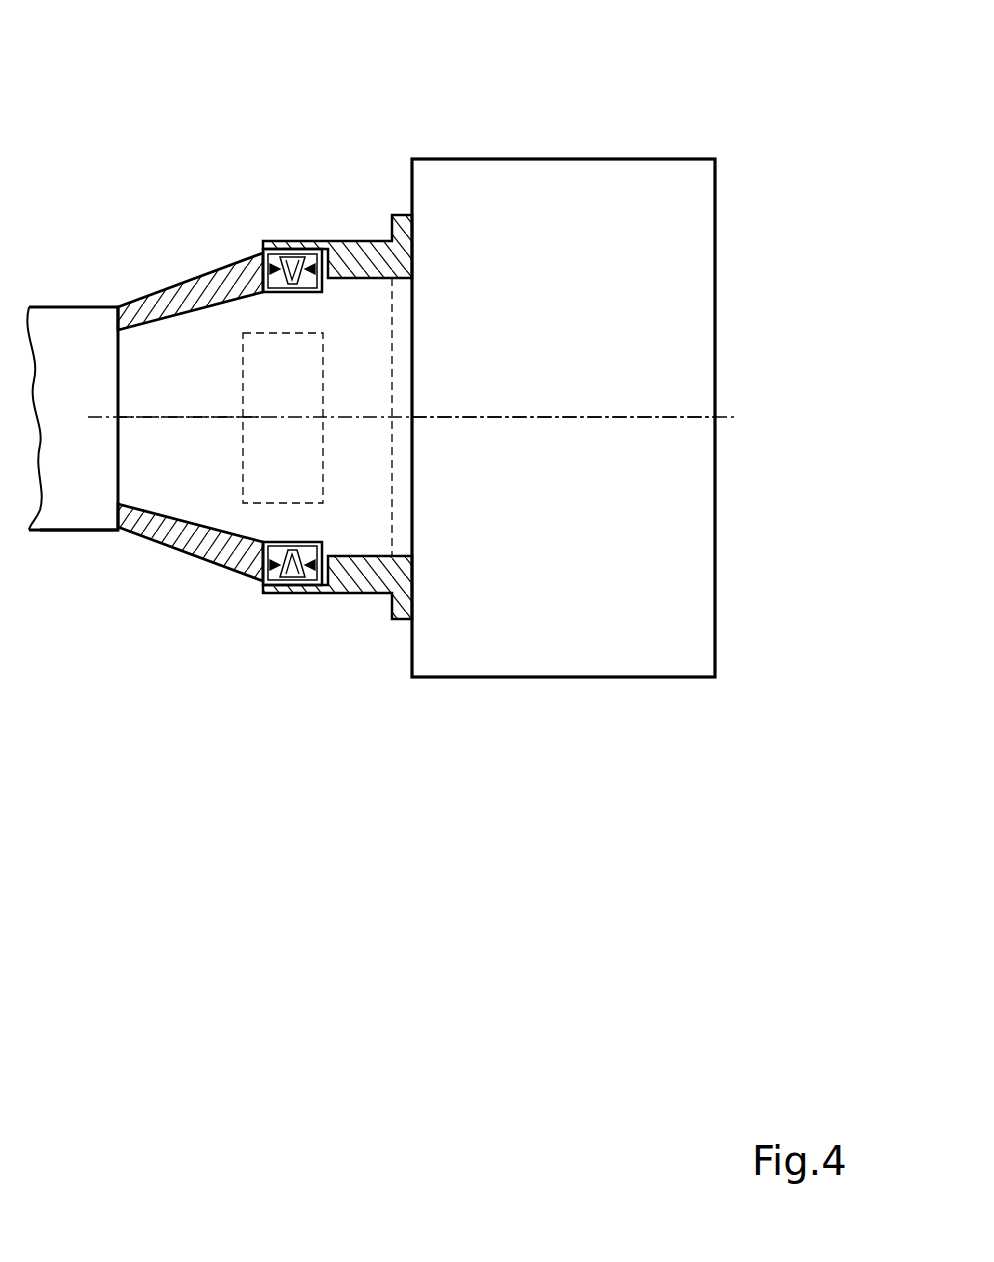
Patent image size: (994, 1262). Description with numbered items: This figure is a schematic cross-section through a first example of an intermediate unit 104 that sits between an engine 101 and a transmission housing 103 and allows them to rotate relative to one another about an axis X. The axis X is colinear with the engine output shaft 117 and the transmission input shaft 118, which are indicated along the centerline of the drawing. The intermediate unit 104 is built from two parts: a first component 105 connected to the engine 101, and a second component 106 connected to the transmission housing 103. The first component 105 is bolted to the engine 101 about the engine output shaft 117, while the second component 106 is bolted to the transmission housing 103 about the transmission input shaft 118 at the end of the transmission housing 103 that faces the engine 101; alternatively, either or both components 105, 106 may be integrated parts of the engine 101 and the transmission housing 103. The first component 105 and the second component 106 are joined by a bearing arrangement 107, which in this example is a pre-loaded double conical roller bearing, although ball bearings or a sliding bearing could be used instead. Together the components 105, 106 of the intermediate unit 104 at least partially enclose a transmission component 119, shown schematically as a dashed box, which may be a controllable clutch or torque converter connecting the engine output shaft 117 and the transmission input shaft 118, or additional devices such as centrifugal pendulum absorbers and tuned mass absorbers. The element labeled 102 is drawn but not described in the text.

The engine 101 is at (483, 152).
The pipe 102 is at (78, 290).
The transmission housing 103 is at (75, 522).
The intermediate unit 104 is at (268, 213).
The first component 105 is at (372, 598).
The second component 106 is at (200, 550).
The bearing arrangement 107 is at (296, 603).
The engine output shaft 117 is at (626, 392).
The transmission input shaft 118 is at (190, 400).
The transmission component 119 is at (333, 328).
The axis X is at (637, 418).